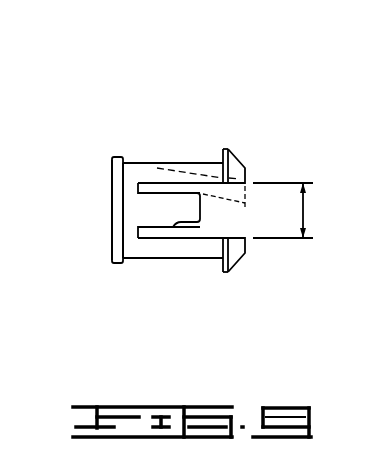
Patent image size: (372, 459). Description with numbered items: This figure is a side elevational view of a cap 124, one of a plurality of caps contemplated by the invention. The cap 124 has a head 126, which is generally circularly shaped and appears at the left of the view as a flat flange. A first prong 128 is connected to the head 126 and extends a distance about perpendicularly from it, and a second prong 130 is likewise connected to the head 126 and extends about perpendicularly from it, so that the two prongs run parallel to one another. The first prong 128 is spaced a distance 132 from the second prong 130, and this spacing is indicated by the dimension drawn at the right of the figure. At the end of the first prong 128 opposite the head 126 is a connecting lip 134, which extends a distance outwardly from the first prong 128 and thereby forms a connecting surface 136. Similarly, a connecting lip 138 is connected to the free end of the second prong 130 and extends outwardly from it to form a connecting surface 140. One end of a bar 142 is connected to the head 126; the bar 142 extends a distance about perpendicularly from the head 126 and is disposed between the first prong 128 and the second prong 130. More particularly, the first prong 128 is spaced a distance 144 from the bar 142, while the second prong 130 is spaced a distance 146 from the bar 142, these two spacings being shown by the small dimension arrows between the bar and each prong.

The cap 124 is at (112, 157).
The head 126 is at (112, 233).
The first prong 128 is at (143, 252).
The second prong 130 is at (139, 167).
The distance 132 is at (305, 210).
The connecting lip 134 is at (236, 265).
The connecting surface 136 is at (222, 268).
The connecting lip 138 is at (238, 150).
The connecting surface 140 is at (223, 149).
The bar 142 is at (202, 212).
The distance 144 is at (173, 193).
The distance 146 is at (155, 227).